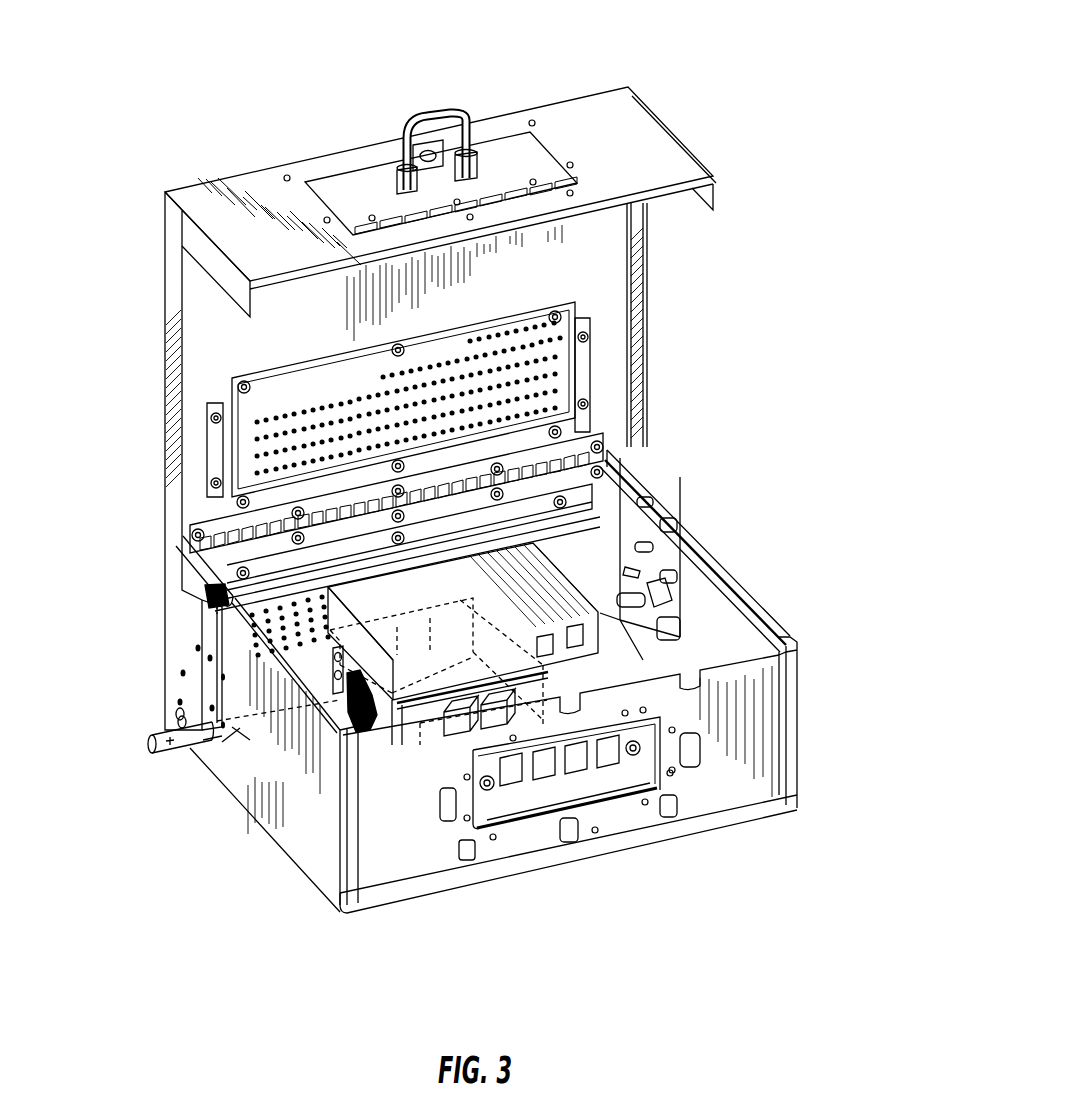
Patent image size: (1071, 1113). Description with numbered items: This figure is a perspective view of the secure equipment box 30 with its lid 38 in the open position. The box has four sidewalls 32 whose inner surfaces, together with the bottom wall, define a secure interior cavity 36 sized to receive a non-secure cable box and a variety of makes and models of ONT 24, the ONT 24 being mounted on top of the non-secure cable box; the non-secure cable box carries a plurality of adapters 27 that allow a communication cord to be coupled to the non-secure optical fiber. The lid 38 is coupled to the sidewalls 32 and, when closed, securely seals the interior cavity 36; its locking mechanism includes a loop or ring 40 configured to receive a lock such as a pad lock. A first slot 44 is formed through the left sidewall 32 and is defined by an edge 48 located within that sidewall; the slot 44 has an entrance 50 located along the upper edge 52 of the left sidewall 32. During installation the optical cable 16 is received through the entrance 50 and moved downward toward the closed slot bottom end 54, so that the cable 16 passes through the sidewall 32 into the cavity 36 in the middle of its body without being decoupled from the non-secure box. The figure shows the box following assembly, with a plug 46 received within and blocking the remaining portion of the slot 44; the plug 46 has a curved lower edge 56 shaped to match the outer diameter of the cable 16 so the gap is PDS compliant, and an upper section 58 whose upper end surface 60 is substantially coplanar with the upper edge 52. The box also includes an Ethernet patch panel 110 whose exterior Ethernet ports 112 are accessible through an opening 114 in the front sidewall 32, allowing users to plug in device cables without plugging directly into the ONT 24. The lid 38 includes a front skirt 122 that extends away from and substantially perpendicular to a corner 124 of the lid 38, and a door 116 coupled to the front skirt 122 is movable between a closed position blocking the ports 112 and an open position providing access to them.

The optical cable 16 is at (168, 752).
The ONT 24 is at (557, 557).
The adapters 27 is at (438, 745).
The secure equipment box 30 is at (793, 323).
The sidewalls 32 is at (767, 607).
The interior cavity 36 is at (740, 643).
The lid 38 is at (168, 215).
The ring 40 is at (455, 118).
The slot 44 is at (204, 695).
The plug 46 is at (183, 673).
The edge 48 is at (240, 735).
The entrance 50 is at (229, 613).
The upper edge 52 is at (330, 705).
The closed slot bottom end 54 is at (207, 747).
The curved lower edge 56 is at (235, 722).
The upper section 58 is at (196, 597).
The upper end surface 60 is at (197, 545).
The Ethernet patch panel 110 is at (558, 797).
The exterior Ethernet ports 112 is at (545, 767).
The opening 114 is at (612, 806).
The door 116 is at (503, 147).
The front skirt 122 is at (647, 147).
The corner 124 is at (645, 92).